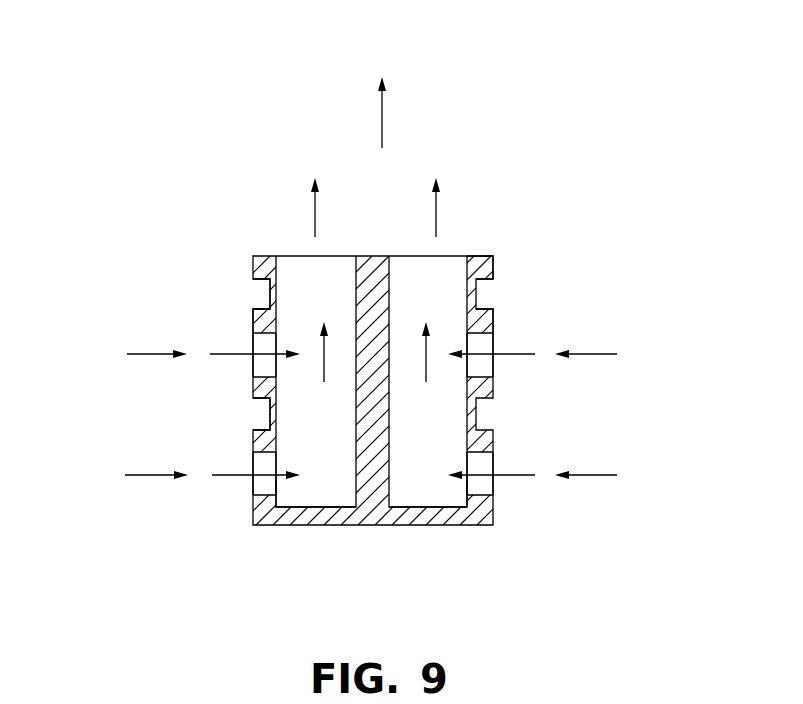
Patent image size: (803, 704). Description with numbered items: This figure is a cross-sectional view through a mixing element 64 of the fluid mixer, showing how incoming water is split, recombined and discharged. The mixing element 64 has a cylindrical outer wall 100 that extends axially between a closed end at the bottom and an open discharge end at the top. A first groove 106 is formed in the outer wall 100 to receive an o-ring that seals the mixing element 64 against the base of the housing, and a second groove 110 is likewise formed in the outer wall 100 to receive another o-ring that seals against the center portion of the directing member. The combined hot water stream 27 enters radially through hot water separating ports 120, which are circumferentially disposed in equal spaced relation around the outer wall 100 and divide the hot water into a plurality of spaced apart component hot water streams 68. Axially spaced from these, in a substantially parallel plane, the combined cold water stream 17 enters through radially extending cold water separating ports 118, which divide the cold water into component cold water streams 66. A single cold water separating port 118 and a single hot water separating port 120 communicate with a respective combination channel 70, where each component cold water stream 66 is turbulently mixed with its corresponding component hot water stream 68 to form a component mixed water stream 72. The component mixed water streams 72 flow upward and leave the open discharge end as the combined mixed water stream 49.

The mixing element 64 is at (580, 138).
The combined mixed water stream 49 is at (385, 110).
The cylindrical outer wall 100 is at (495, 267).
The first groove 106 is at (273, 297).
The hot water separating ports 120 is at (267, 337).
The combined hot water stream 27 is at (147, 352).
The component hot water streams 68 is at (250, 355).
The second groove 110 is at (273, 415).
The component cold water streams 66 is at (252, 473).
The combined cold water stream 17 is at (165, 474).
The cold water separating ports 118 is at (262, 493).
The component mixed water streams 72 is at (325, 368).
The combination channels 70 is at (423, 488).